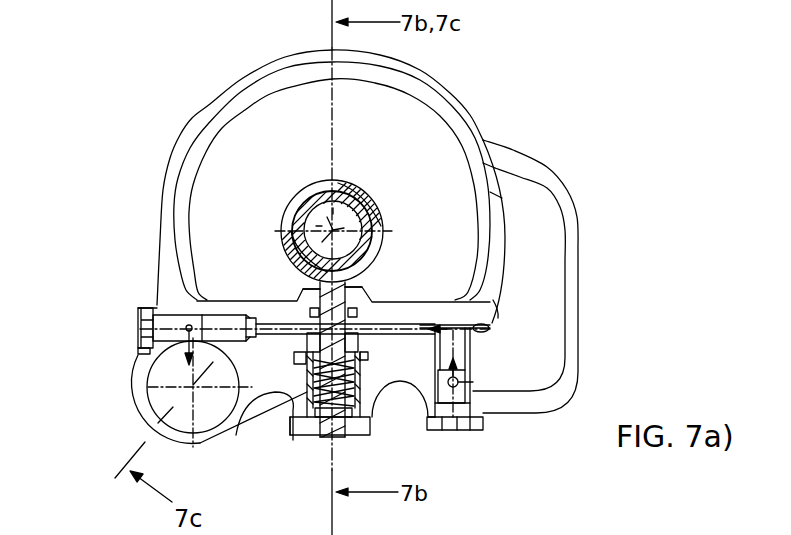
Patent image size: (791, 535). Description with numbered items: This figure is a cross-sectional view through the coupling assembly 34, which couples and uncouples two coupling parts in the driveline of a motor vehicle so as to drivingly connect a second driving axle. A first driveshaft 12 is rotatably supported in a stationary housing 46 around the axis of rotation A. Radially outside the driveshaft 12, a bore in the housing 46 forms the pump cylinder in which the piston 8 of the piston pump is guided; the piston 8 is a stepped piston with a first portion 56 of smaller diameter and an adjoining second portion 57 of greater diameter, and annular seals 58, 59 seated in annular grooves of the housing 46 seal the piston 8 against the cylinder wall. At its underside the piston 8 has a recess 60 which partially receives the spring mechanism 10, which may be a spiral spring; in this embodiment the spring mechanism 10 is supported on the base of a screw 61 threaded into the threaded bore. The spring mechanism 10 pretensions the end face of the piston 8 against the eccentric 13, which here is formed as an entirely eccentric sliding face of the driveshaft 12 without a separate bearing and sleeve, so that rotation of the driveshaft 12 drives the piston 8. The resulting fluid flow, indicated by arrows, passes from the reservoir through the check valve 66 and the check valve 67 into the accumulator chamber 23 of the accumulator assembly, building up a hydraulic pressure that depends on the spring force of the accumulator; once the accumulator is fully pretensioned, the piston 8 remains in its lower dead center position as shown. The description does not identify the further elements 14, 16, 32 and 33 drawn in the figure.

The coupling assembly 34 is at (124, 96).
The housing 46 is at (158, 192).
The frame 14 is at (538, 363).
The axis of rotation A is at (320, 198).
The first driveshaft 12 is at (364, 197).
The eccentric 13 is at (372, 262).
The piston 8 is at (316, 293).
The spring mechanism 10 is at (324, 432).
The rod end 33 is at (343, 430).
The first portion 56 is at (362, 288).
The annular seal 58 is at (357, 313).
The threaded rod 16 is at (262, 306).
The check valve 67 is at (140, 330).
The annular seal 59 is at (294, 359).
The spring housing 32 is at (358, 341).
The second portion 57 is at (356, 371).
The accumulator chamber 23 is at (221, 418).
The recess 60 is at (263, 430).
The screw 61 is at (292, 440).
The check valve 66 is at (461, 430).